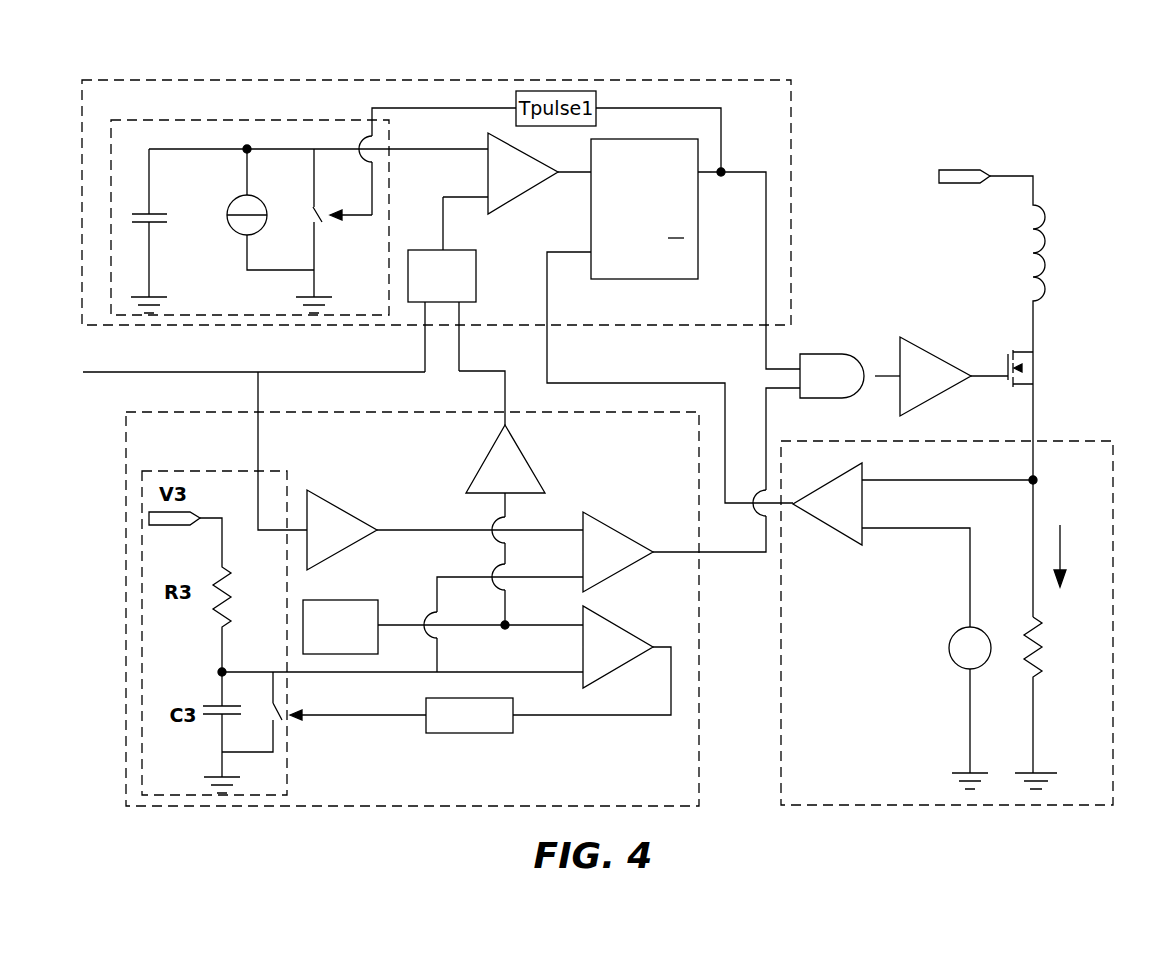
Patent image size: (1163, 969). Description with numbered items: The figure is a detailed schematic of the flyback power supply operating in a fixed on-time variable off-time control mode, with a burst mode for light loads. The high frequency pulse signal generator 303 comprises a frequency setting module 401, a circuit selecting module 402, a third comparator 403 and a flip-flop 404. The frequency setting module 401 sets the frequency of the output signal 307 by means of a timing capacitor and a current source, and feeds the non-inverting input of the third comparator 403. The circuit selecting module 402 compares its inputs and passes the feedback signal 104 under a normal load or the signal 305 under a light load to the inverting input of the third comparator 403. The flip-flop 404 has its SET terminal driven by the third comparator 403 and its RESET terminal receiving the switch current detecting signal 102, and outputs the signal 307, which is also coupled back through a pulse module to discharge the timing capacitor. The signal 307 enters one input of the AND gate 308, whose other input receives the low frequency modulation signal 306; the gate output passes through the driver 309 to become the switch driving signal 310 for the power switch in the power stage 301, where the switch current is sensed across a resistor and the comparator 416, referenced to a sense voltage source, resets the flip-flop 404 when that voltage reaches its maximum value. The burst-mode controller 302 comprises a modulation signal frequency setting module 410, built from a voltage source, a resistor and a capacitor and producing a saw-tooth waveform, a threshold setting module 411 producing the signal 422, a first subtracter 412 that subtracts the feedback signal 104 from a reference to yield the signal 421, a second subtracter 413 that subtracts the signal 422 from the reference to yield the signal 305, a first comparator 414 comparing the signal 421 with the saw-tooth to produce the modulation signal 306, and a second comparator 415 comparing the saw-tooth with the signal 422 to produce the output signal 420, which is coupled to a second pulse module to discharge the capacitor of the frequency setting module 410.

The switch current detecting signal 102 is at (547, 308).
The feedback signal 104 is at (123, 372).
The power switch stage 301 is at (1060, 440).
The burst-mode controller 302 is at (126, 602).
The high frequency pulse signal generator 303 is at (718, 80).
The signal 305 is at (505, 388).
The low frequency modulation signal 306 is at (750, 555).
The output signal 307 is at (777, 368).
The AND gate 308 is at (847, 354).
The gate driver 309 is at (927, 347).
The switch driving signal 310 is at (982, 372).
The frequency setting module 401 is at (168, 120).
The circuit selecting module 402 is at (476, 287).
The third comparator 403 is at (542, 187).
The flip-flop 404 is at (698, 225).
The modulation signal frequency setting module 410 is at (288, 740).
The threshold setting module 411 is at (345, 600).
The first subtracter 412 is at (323, 498).
The second subtracter 413 is at (537, 463).
The first comparator 414 is at (607, 518).
The second comparator 415 is at (620, 627).
The comparator 416 is at (860, 533).
The output signal 420 is at (638, 717).
The signal 421 is at (400, 527).
The signal 422 is at (487, 628).